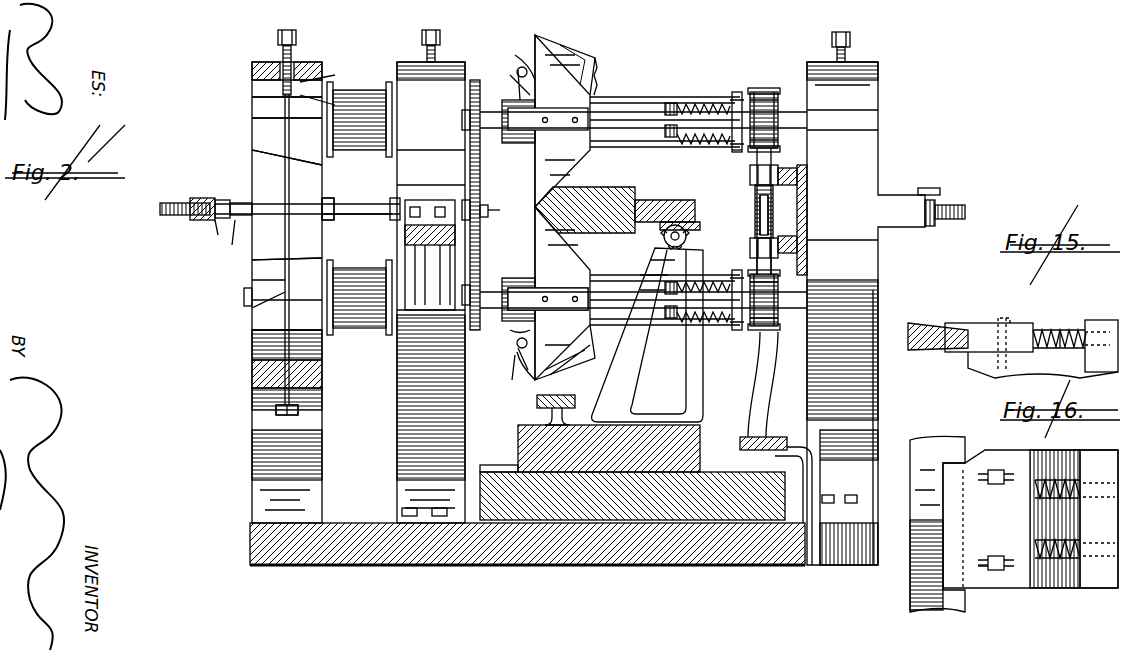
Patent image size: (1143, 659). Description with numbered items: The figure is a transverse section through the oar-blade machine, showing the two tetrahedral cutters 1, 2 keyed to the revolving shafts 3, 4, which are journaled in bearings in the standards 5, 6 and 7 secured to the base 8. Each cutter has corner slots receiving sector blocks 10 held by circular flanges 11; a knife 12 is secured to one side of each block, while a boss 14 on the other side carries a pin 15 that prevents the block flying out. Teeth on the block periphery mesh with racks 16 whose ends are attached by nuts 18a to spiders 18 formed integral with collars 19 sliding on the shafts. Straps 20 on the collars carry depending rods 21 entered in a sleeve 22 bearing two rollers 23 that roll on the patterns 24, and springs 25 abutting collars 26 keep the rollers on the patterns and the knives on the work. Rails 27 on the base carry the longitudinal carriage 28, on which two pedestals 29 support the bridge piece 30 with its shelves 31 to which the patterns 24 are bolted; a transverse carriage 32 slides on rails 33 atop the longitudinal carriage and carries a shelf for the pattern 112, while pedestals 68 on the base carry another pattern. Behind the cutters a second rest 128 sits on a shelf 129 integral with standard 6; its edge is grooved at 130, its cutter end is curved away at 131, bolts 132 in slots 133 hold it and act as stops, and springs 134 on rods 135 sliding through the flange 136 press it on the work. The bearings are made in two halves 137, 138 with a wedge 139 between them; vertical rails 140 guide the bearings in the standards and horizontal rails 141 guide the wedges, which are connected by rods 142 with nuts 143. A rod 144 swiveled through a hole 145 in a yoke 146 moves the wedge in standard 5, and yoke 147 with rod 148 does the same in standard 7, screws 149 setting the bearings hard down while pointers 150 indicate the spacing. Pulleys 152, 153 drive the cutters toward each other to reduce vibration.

In FIG. 2, the cutter 1 is at (562, 121).
In FIG. 2, the cutter 2 is at (562, 293).
In FIG. 2, the revolving shaft 3 is at (788, 108).
In FIG. 2, the revolving shaft 4 is at (812, 298).
In FIG. 2, the standard 5 is at (312, 62).
In FIG. 2, the standard 6 is at (440, 78).
In FIG. 2, the standard 7 is at (866, 313).
In FIG. 2, the base 8 is at (340, 566).
In FIG. 2, the sector block 10 is at (596, 65).
In FIG. 2, the circular flange 11 is at (580, 55).
In FIG. 2, the knife 12 is at (563, 48).
In FIG. 2, the boss 14 is at (555, 312).
In FIG. 2, the pin 15 is at (515, 70).
In FIG. 2, the rack 16 is at (620, 95).
In FIG. 2, the spider 18 is at (737, 90).
In FIG. 2, the nut 18a is at (735, 152).
In FIG. 2, the collar 19 is at (752, 155).
In FIG. 2, the strap 20 is at (765, 88).
In FIG. 2, the rod 21 is at (772, 162).
In FIG. 2, the sleeve 22 is at (754, 208).
In FIG. 2, the roller 23 is at (750, 178).
In FIG. 2, the pattern 24 is at (797, 178).
In FIG. 2, the spring 25 is at (702, 105).
In FIG. 2, the collar 26 is at (670, 103).
In FIG. 2, the rail 27 is at (513, 520).
In FIG. 2, the longitudinal carriage 28 is at (640, 525).
In FIG. 2, the pedestal 29 is at (747, 392).
In FIG. 2, the bridge piece 30 is at (807, 216).
In FIG. 2, the shelf 31 is at (760, 212).
In FIG. 2, the transverse carriage 32 is at (700, 447).
In FIG. 2, the rail 33 is at (497, 465).
In FIG. 2, the pedestal 68 is at (805, 470).
In FIG. 2, the pattern 112 is at (536, 405).
In FIG. 15, the second rest 128 is at (975, 323).
In FIG. 16, the second rest 128 is at (915, 582).
In FIG. 15, the shelf 129 is at (1043, 365).
In FIG. 2, the groove 130 is at (450, 173).
In FIG. 15, the groove 130 is at (935, 350).
In FIG. 16, the curved end 131 is at (978, 440).
In FIG. 16, the bolt 132 is at (994, 485).
In FIG. 16, the slot 133 is at (992, 560).
In FIG. 15, the spring 134 is at (1065, 328).
In FIG. 15, the rod 135 is at (1045, 328).
In FIG. 15, the flange 136 is at (1102, 320).
In FIG. 16, the flange 136 is at (1100, 590).
In FIG. 2, the bearing half 137 is at (252, 108).
In FIG. 2, the bearing half 138 is at (252, 136).
In FIG. 2, the wedge 139 is at (287, 246).
In FIG. 2, the vertical rail 140 is at (322, 83).
In FIG. 2, the horizontal rail 141 is at (297, 185).
In FIG. 2, the rod 142 is at (362, 230).
In FIG. 2, the nut 143 is at (360, 198).
In FIG. 2, the rod 144 is at (178, 216).
In FIG. 2, the hole 145 is at (212, 198).
In FIG. 2, the yoke 146 is at (252, 280).
In FIG. 2, the yoke 147 is at (928, 205).
In FIG. 2, the rod 148 is at (962, 207).
In FIG. 2, the screw 149 is at (287, 28).
In FIG. 2, the pointer 150 is at (900, 190).
In FIG. 2, the pulley 152 is at (359, 119).
In FIG. 2, the pulley 153 is at (362, 333).